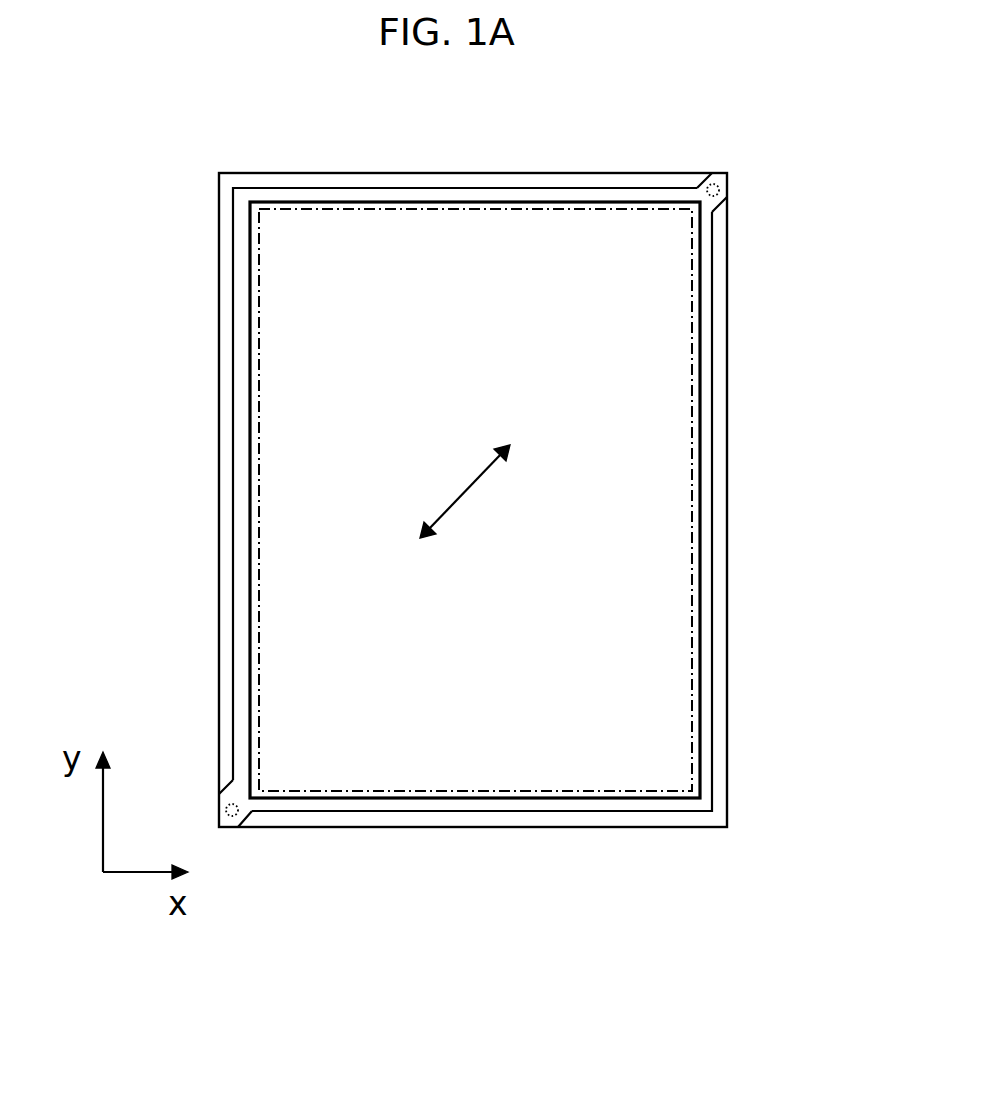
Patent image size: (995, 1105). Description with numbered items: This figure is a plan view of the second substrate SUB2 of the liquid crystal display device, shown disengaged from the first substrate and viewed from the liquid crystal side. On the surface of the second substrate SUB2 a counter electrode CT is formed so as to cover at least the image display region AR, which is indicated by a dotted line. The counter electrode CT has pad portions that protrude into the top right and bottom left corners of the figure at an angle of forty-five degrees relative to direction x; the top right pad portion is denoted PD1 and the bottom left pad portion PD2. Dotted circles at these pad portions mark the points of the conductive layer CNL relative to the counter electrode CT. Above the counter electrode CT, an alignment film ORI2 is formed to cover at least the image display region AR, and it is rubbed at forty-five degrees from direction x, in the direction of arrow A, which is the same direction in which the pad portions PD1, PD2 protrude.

The second substrate SUB2 is at (220, 458).
The counter electrode CT is at (726, 497).
The alignment film ORI2 is at (250, 287).
The image display region AR is at (475, 500).
The conductive layer CNL is at (723, 200).
The pad portion PD1 is at (705, 180).
The pad portion PD2 is at (240, 817).
The arrow A is at (465, 491).